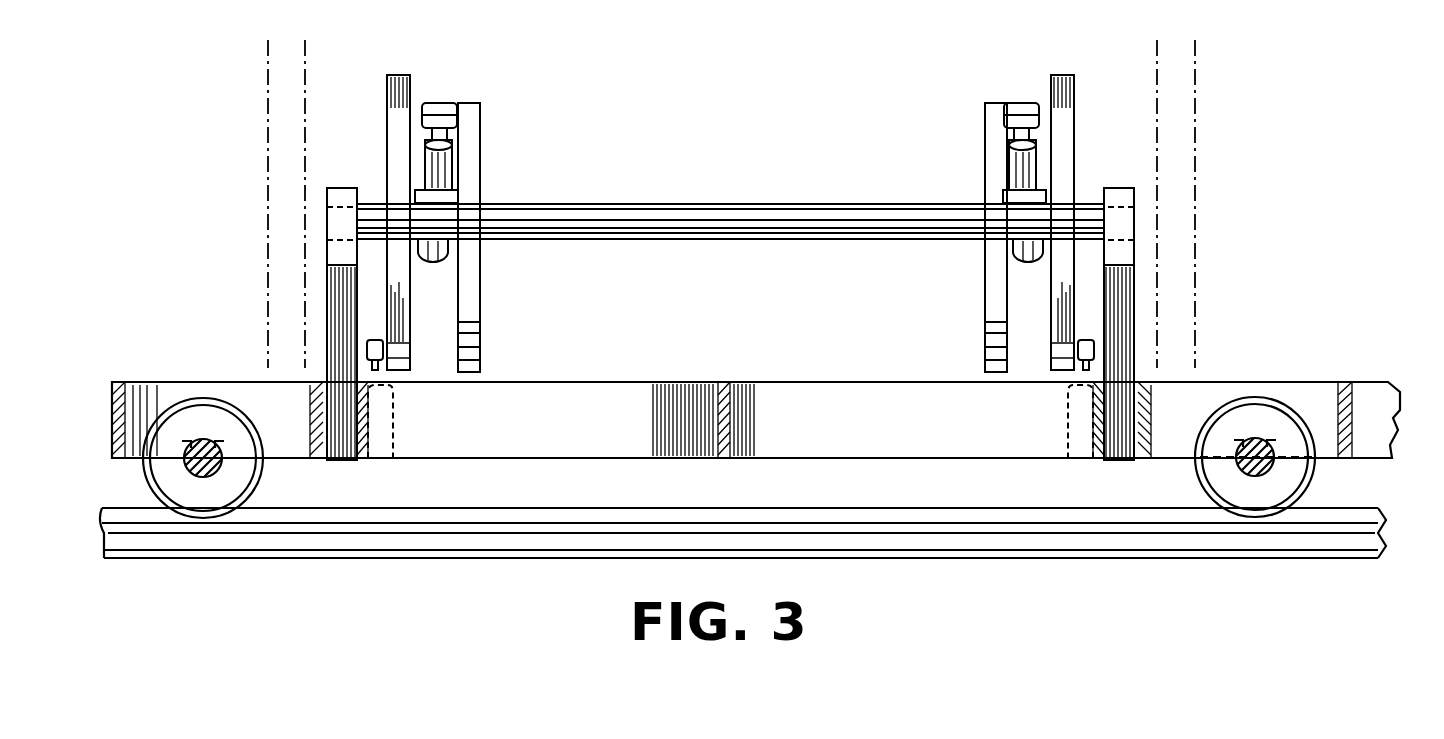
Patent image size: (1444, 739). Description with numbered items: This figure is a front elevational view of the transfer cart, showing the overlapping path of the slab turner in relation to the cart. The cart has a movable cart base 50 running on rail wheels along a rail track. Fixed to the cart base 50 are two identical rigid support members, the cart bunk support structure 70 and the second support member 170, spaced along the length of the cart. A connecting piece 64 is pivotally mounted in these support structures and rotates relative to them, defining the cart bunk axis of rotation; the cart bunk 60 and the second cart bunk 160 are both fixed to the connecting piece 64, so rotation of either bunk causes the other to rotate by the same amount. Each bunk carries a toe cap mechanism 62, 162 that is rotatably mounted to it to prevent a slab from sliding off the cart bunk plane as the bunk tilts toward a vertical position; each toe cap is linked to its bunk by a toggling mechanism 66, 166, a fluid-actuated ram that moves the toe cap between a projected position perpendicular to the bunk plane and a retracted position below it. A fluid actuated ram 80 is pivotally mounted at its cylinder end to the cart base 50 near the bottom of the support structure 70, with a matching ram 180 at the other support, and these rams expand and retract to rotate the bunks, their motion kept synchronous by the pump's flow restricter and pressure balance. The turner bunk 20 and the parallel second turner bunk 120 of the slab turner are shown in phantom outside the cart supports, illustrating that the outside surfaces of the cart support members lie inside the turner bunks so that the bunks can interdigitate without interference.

The turner bunk 20 is at (1195, 90).
The cart base 50 is at (840, 382).
The cart bunk 60 is at (1072, 137).
The toe cap mechanism 62 is at (995, 302).
The connecting piece 64 is at (745, 220).
The toggling mechanism 66 is at (1030, 102).
The cart bunk support structure 70 is at (1123, 282).
The fluid actuated ram 80 is at (1062, 412).
The second turner bunk 120 is at (267, 160).
The second cart bunk 160 is at (387, 92).
The toe cap mechanism 162 is at (472, 305).
The toggling mechanism 166 is at (443, 103).
The rigid support member 170 is at (337, 292).
The fluid actuated ram 180 is at (387, 422).